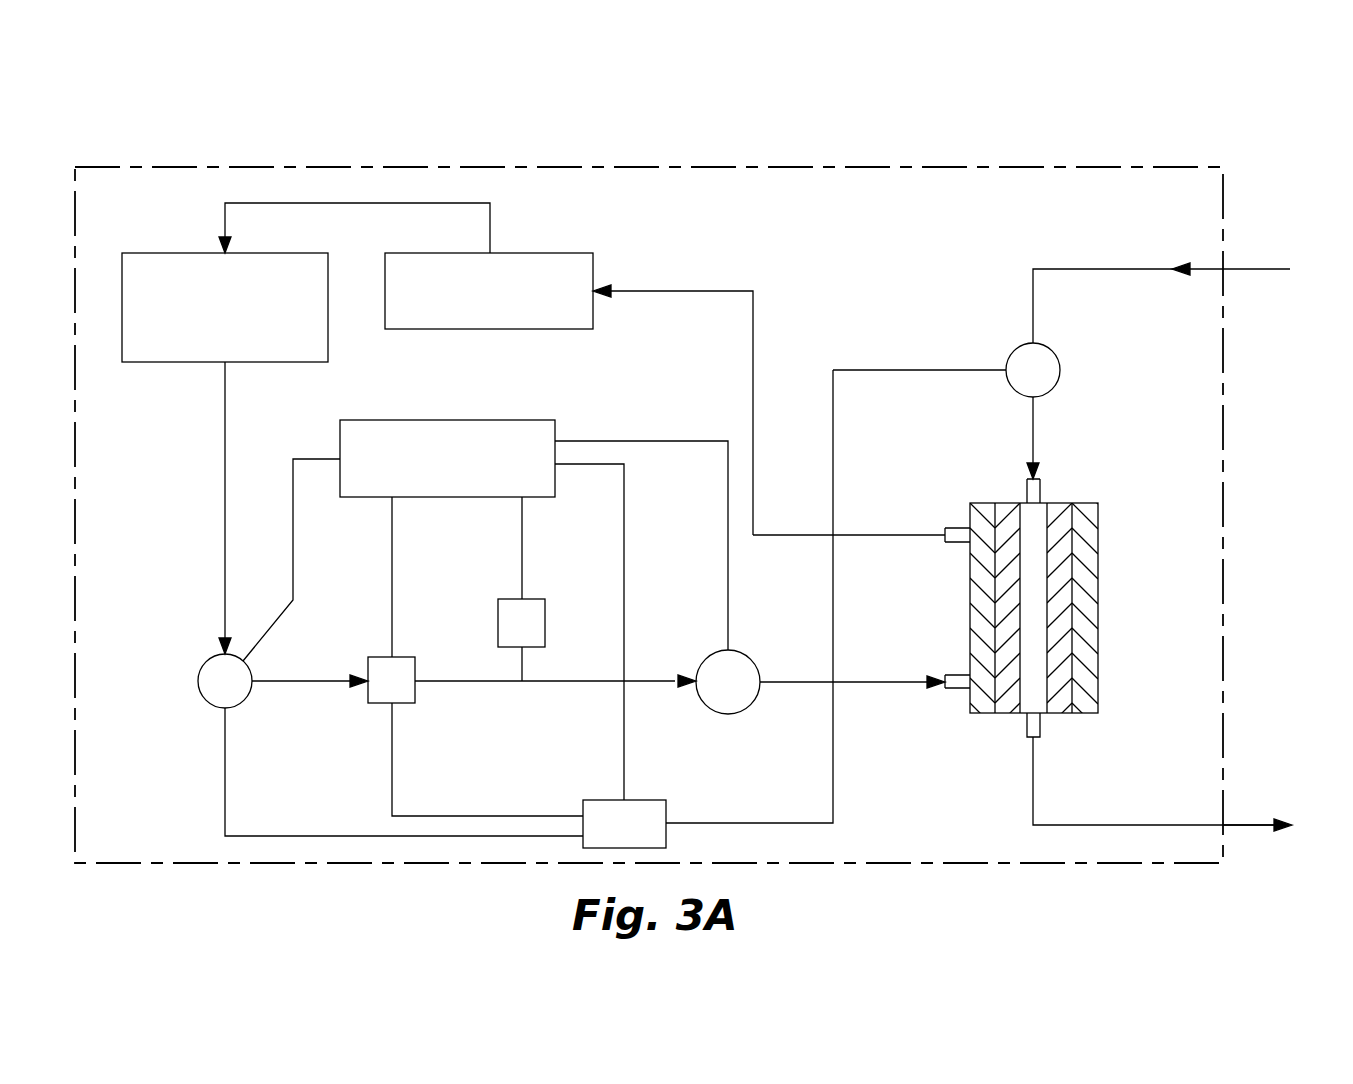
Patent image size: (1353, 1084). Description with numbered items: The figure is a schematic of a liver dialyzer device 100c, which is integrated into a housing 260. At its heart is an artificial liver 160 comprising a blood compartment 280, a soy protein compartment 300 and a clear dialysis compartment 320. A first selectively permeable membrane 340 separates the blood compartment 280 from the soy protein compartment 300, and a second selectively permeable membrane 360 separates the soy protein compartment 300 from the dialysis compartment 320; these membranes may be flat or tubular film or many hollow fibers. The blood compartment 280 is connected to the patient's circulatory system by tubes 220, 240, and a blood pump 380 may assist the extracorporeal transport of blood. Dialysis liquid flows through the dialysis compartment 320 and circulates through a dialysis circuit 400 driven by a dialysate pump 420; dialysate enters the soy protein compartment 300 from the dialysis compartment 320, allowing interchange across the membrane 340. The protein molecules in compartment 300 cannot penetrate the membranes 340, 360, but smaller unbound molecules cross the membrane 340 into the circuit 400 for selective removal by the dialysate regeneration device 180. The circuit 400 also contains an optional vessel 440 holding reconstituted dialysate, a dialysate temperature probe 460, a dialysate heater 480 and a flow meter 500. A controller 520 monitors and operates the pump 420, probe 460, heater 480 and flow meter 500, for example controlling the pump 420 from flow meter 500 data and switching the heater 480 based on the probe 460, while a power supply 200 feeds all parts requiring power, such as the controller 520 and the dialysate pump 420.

The liver dialyzer device 100c is at (694, 500).
The housing 260 is at (766, 167).
The vessel 440 is at (153, 253).
The dialysate regeneration device 180 is at (570, 253).
The dialysis circuit 400 is at (717, 291).
The tube 220 is at (1263, 269).
The blood pump 380 is at (1016, 352).
The artificial liver 160 is at (1027, 588).
The second selectively permeable membrane 360 is at (993, 503).
The first selectively permeable membrane 340 is at (1017, 503).
The dialysis compartment 320 is at (977, 600).
The soy protein compartment 300 is at (1003, 705).
The blood compartment 280 is at (1035, 617).
The tube 240 is at (1252, 828).
The controller 520 is at (533, 420).
The dialysate pump 420 is at (198, 677).
The dialysate heater 480 is at (407, 657).
The dialysate temperature probe 460 is at (548, 599).
The flow meter 500 is at (748, 657).
The power supply 200 is at (665, 800).